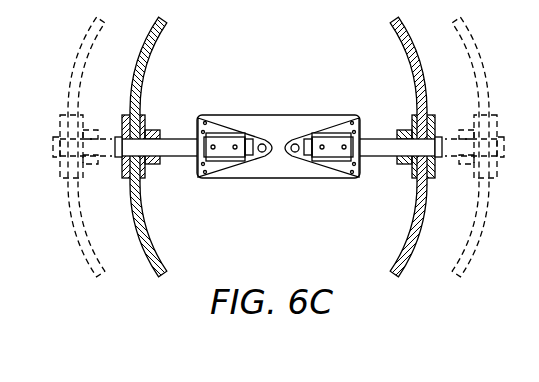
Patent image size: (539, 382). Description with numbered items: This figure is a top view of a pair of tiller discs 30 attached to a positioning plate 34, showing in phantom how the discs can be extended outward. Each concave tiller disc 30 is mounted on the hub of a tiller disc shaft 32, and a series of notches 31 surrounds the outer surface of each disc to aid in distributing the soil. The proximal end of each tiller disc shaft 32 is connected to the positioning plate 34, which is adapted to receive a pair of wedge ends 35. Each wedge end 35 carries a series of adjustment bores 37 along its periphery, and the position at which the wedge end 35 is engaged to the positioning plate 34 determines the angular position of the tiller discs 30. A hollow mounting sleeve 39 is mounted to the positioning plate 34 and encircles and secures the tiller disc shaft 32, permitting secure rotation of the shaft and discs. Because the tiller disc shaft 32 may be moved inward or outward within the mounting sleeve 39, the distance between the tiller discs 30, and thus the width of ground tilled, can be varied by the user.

The tiller disc 30 is at (132, 72).
The notches 31 is at (160, 18).
The tiller disc shaft 32 is at (176, 150).
The positioning plate 34 is at (280, 123).
The wedge end 35 is at (217, 128).
The adjustment bores 37 is at (198, 119).
The hollow mounting sleeve 39 is at (232, 151).